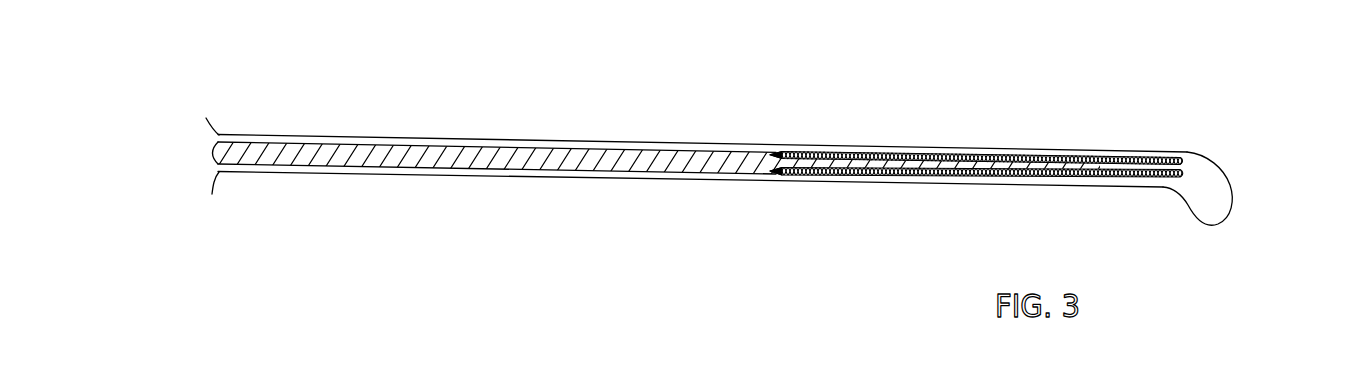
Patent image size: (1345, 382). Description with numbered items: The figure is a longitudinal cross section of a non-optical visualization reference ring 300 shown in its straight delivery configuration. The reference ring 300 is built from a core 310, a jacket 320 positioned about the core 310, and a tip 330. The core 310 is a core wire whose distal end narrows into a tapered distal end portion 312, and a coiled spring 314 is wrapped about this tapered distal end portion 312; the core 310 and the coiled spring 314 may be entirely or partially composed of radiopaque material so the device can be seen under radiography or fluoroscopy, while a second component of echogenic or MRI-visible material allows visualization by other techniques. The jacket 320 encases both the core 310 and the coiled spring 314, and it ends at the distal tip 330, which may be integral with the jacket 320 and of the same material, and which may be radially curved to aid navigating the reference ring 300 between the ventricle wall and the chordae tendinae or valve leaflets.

The non-optical visualization reference ring 300 is at (898, 321).
The core 310 is at (452, 143).
The tapered distal end portion 312 is at (872, 166).
The coiled spring 314 is at (839, 152).
The jacket 320 is at (667, 142).
The distal tip 330 is at (1231, 189).